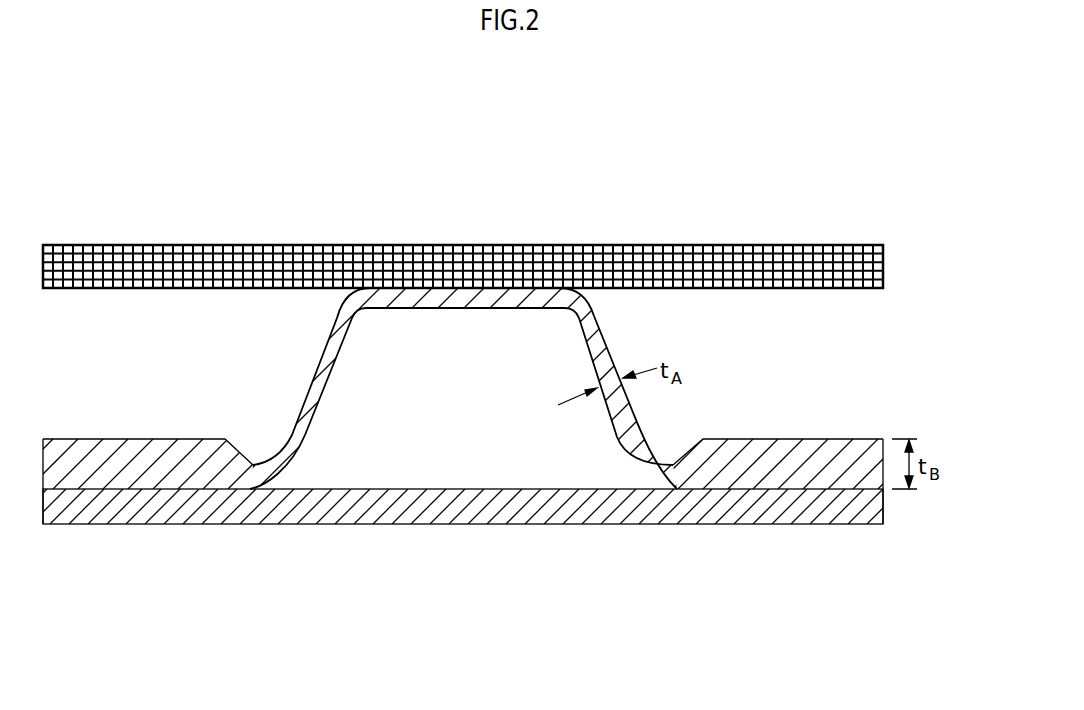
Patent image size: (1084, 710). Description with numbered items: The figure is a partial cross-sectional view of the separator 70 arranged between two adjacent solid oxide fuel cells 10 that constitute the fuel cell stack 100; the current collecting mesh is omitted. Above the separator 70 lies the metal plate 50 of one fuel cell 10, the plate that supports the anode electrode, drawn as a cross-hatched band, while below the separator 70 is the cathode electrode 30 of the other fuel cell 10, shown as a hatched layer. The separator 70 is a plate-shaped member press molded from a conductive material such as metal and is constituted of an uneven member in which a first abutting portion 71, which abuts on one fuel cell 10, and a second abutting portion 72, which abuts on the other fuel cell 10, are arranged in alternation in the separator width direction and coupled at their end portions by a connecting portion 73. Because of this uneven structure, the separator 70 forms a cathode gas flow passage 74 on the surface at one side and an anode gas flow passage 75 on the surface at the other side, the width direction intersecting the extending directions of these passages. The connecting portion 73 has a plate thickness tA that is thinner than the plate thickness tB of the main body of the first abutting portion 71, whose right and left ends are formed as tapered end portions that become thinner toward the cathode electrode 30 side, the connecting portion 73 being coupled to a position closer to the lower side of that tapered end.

The fuel cell stack 100 is at (833, 191).
The solid oxide fuel cell 10 is at (866, 245).
The metal plate 50 is at (880, 266).
The separator 70 is at (305, 351).
The first abutting portion 71 is at (131, 458).
The second abutting portion 72 is at (478, 298).
The connecting portion 73 is at (325, 384).
The cathode gas flow passage 74 is at (485, 420).
The anode gas flow passage 75 is at (807, 380).
The cathode electrode 30 is at (817, 524).